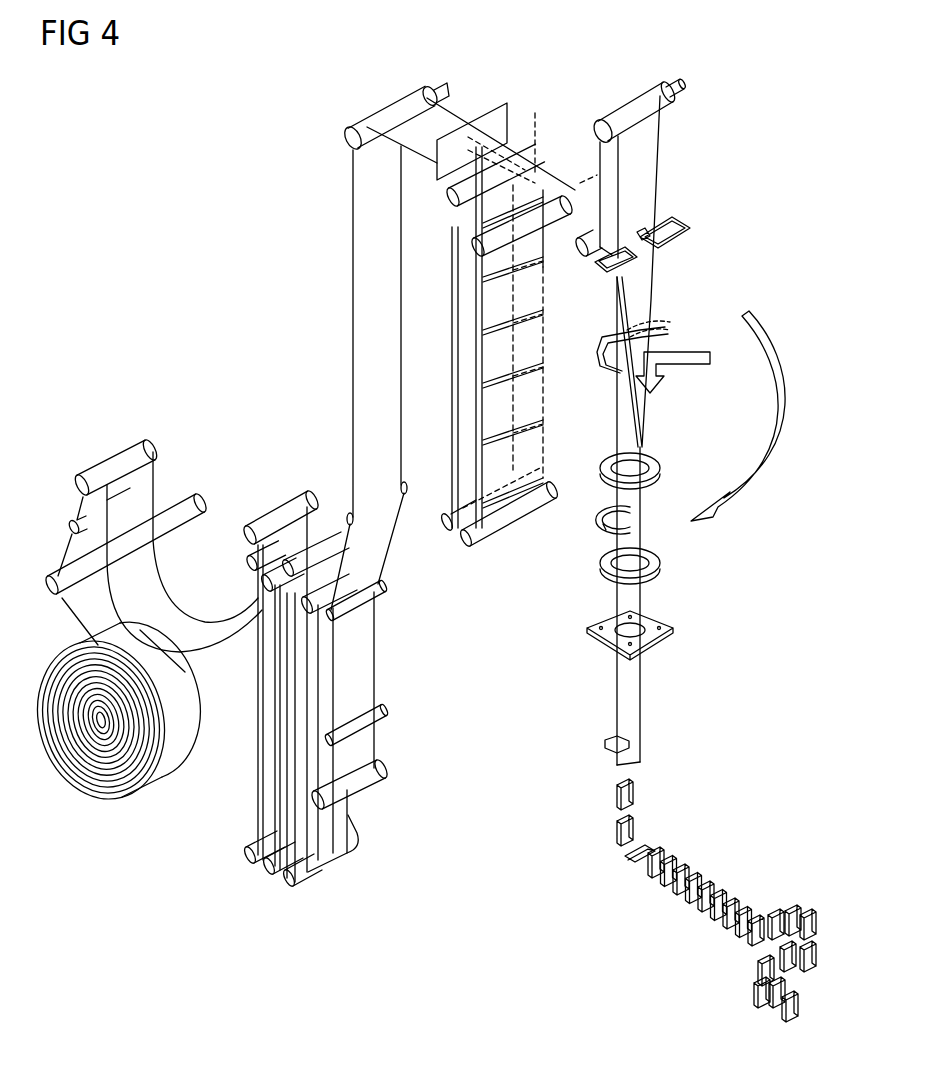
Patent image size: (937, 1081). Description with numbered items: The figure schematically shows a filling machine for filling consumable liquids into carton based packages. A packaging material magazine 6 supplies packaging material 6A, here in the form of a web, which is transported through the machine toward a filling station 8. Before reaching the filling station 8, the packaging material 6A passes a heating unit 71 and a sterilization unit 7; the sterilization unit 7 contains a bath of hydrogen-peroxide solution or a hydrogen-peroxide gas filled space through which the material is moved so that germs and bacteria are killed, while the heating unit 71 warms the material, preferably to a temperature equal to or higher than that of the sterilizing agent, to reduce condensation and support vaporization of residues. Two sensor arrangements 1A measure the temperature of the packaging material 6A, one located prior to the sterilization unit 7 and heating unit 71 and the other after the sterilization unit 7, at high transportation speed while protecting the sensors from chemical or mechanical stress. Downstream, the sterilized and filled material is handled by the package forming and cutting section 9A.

The sensor arrangement 1A is at (447, 83).
The heating unit 71 is at (501, 92).
The filling station 8 is at (687, 293).
The sterilization unit 7 is at (552, 412).
The packaging material 6A is at (361, 372).
The formed tube 9A is at (658, 703).
The packaging material magazine 6 is at (75, 815).